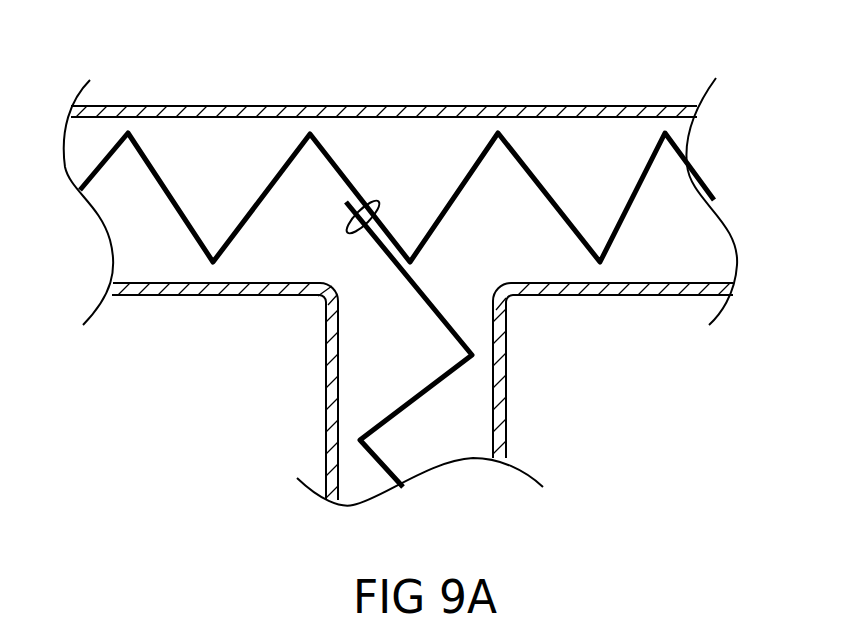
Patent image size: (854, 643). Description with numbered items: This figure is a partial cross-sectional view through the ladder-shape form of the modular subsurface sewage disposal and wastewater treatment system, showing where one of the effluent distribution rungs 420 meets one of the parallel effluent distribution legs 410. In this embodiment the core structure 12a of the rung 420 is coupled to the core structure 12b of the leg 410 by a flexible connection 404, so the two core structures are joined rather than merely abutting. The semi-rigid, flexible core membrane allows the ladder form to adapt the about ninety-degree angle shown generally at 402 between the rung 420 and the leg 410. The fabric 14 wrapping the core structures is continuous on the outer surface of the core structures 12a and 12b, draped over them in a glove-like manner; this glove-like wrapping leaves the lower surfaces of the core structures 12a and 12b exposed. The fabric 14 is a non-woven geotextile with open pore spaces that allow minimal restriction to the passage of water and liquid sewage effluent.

The effluent distribution leg 410 is at (132, 106).
The core structure 12b is at (280, 175).
The flexible connection 404 is at (380, 202).
The core structure 12a is at (418, 398).
The ninety-degree angle 402 is at (298, 318).
The effluent distribution rung 420 is at (326, 413).
The fabric 14 is at (636, 297).